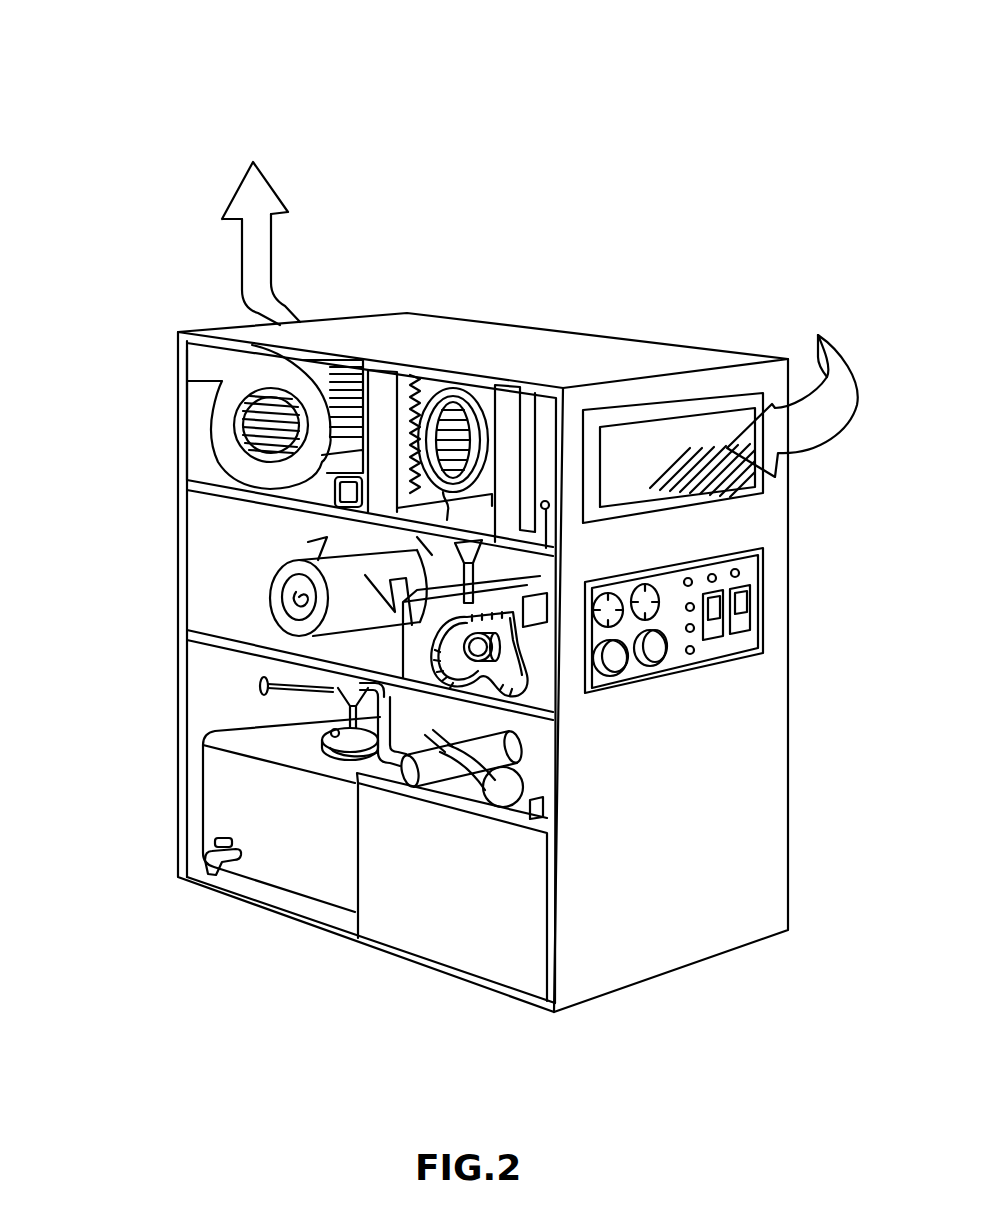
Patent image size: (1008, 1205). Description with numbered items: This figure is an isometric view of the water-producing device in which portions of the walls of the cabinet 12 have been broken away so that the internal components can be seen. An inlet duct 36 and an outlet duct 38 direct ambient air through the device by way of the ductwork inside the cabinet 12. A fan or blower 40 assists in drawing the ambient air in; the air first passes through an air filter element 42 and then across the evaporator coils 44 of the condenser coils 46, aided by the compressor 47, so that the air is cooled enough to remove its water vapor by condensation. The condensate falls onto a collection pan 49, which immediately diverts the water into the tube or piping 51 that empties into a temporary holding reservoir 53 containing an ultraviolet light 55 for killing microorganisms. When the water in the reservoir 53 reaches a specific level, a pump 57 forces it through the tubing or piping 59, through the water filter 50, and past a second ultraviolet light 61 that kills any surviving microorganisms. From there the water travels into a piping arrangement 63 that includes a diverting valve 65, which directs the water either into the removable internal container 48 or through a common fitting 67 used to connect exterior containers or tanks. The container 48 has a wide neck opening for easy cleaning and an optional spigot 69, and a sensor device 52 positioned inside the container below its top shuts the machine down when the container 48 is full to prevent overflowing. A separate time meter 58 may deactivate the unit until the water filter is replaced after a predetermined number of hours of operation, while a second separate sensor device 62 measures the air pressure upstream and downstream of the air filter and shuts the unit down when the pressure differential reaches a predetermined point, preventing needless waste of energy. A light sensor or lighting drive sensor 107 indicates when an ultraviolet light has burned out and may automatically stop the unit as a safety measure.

The cabinet 12 is at (441, 340).
The inlet duct 36 is at (778, 418).
The outlet duct 38 is at (205, 362).
The fan or blower 40 is at (288, 377).
The air filter element 42 is at (510, 413).
The evaporator coils 44 is at (445, 388).
The condenser coils 46 is at (378, 383).
The compressor 47 is at (297, 577).
The removable internal container 48 is at (225, 805).
The collection pan 49 is at (455, 518).
The water filter 50 is at (520, 786).
The tube or piping 51 is at (458, 575).
The sensor device 52 is at (335, 737).
The temporary holding reservoir 53 is at (415, 655).
The ultraviolet light 55 is at (495, 645).
The pump 57 is at (445, 722).
The time meter 58 is at (530, 808).
The tubing or piping 59 is at (500, 758).
The second ultraviolet light 61 is at (470, 742).
The second separate sensor device 62 is at (550, 505).
The piping arrangement 63 is at (330, 755).
The diverting valve 65 is at (353, 713).
The common fitting 67 is at (262, 681).
The spigot 69 is at (180, 877).
The light sensor 107 is at (532, 608).